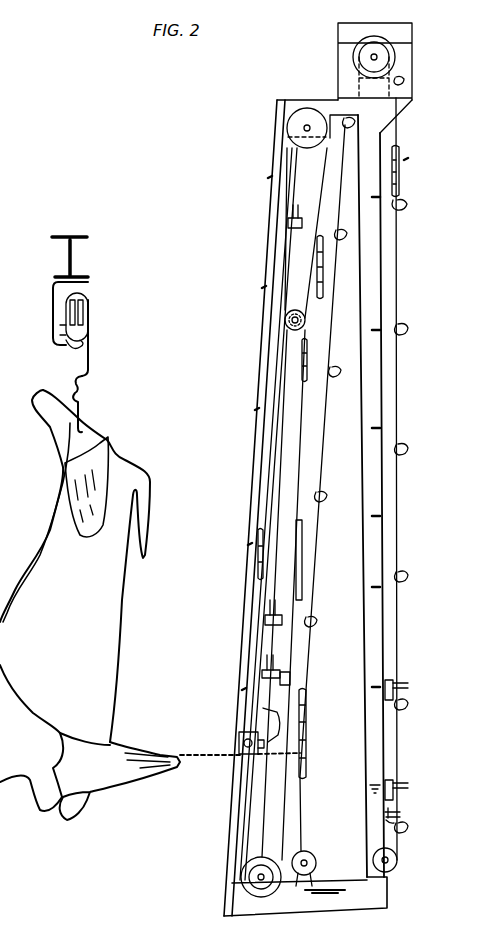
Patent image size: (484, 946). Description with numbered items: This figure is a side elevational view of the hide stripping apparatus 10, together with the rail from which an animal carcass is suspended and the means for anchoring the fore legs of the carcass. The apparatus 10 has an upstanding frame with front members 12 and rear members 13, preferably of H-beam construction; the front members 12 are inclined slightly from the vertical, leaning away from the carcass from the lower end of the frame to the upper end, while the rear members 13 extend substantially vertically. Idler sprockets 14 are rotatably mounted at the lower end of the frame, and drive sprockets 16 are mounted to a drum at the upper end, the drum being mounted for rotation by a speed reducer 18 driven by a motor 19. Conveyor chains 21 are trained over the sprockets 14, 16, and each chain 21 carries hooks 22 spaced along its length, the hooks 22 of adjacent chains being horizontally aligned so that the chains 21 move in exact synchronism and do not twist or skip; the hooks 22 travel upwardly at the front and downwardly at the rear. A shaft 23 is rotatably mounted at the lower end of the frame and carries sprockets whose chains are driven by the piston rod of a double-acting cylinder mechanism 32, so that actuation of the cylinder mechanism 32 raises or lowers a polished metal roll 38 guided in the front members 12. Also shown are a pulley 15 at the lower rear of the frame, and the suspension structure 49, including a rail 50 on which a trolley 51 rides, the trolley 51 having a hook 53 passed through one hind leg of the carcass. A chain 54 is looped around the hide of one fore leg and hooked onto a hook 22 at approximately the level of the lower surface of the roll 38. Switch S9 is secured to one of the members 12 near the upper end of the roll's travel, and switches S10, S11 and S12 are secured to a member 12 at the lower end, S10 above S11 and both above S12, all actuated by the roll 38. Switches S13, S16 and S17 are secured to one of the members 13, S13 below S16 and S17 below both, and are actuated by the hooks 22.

The hide stripping apparatus 10 is at (246, 330).
The front members 12 is at (270, 290).
The rear members 13 is at (366, 431).
The idler sprockets 14 is at (300, 853).
The pulley 15 is at (376, 856).
The drive sprockets 16 is at (358, 55).
The speed reducer 18 is at (346, 75).
The motor 19 is at (346, 33).
The conveyor chains 21 is at (321, 543).
The hooks 22 is at (320, 497).
The shaft 23 is at (251, 883).
The cylinder mechanism 32 is at (304, 588).
The roll 38 is at (240, 741).
The suspension structure 49 is at (105, 327).
The rail 50 is at (92, 342).
The trolley 51 is at (95, 303).
The hook 53 is at (90, 410).
The chain 54 is at (215, 760).
The switch S9 is at (288, 226).
The switch S10 is at (265, 618).
The switch S11 is at (262, 672).
The switch S12 is at (263, 708).
The switch S13 is at (391, 780).
The switch S16 is at (390, 680).
The switch S17 is at (395, 812).